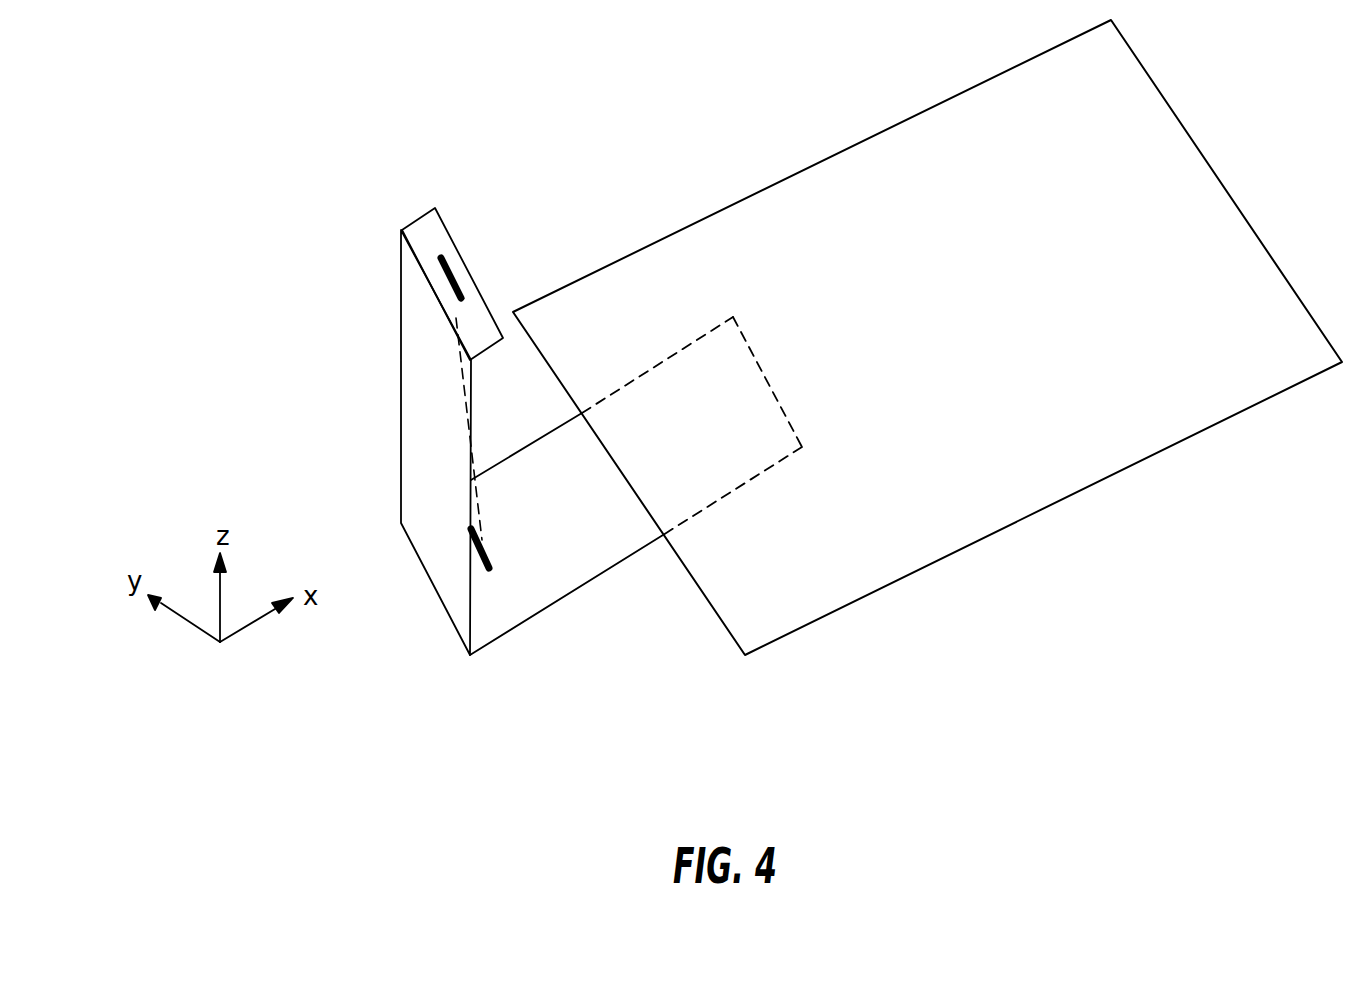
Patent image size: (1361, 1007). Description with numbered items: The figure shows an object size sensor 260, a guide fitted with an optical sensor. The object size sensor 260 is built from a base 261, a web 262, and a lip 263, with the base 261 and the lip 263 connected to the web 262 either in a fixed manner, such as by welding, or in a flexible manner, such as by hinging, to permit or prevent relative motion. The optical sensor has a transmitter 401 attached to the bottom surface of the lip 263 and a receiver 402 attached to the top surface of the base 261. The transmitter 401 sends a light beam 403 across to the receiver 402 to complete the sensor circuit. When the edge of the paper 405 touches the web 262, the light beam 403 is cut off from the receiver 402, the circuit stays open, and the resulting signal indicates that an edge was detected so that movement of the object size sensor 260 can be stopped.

The object size sensor 260 is at (284, 132).
The base 261 is at (523, 590).
The web 262 is at (415, 397).
The lip 263 is at (420, 232).
The transmitter 401 is at (445, 281).
The receiver 402 is at (492, 558).
The light beam 403 is at (478, 505).
The paper 405 is at (823, 619).